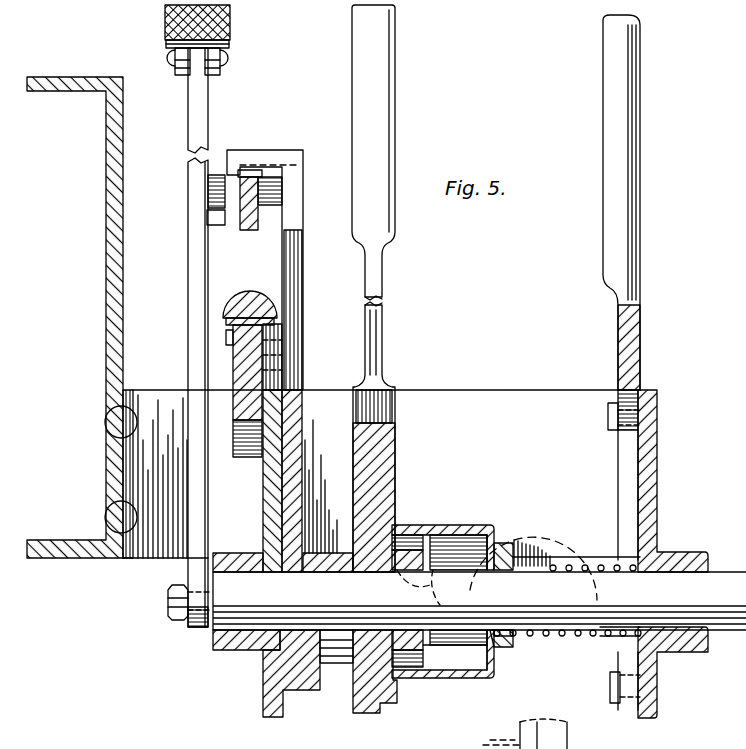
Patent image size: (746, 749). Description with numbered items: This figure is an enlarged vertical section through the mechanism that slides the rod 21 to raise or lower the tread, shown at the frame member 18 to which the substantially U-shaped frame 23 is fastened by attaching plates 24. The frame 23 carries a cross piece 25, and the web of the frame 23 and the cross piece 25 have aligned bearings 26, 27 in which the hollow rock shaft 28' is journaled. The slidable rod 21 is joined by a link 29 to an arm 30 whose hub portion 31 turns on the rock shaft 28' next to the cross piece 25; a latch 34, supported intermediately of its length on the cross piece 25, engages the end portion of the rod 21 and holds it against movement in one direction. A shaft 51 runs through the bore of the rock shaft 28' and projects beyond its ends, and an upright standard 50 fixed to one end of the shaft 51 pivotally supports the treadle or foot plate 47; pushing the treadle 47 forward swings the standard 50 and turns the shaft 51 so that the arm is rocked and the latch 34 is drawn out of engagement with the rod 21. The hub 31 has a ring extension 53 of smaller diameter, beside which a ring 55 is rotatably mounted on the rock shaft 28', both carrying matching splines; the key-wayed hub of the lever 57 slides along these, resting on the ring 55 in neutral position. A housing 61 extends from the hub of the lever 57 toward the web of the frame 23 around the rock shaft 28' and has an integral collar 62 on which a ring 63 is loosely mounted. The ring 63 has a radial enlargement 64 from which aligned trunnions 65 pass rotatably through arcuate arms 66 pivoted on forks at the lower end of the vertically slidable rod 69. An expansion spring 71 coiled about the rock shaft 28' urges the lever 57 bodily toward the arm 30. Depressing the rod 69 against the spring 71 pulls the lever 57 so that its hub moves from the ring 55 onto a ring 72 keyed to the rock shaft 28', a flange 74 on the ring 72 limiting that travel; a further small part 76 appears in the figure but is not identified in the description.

The frame member 18 is at (117, 272).
The slidable rod 21 is at (252, 302).
The frame 23 is at (650, 427).
The attaching plates 24 is at (135, 405).
The cross piece 25 is at (265, 492).
The bearing 26 is at (663, 655).
The bearing 27 is at (242, 652).
The hollow rock shaft 28' is at (479, 567).
The link 29 is at (250, 230).
The arm 30 is at (292, 323).
The hub portion 31 is at (298, 693).
The latch 34 is at (243, 392).
The treadle 47 is at (232, 30).
The standard 50 is at (190, 308).
The shaft 51 is at (205, 627).
The ring extension 53 is at (333, 665).
The ring 55 is at (372, 660).
The lever 57 is at (375, 358).
The housing 61 is at (457, 527).
The collar portion 62 is at (498, 645).
The ring 63 is at (612, 637).
The radial enlargement 64 is at (510, 645).
The trunnions 65 is at (500, 545).
The arcuate arms 66 is at (545, 560).
The rod 69 is at (622, 253).
The expansion spring 71 is at (603, 567).
The ring 72 is at (402, 560).
The flange 74 is at (432, 672).
The pin 76 is at (612, 693).